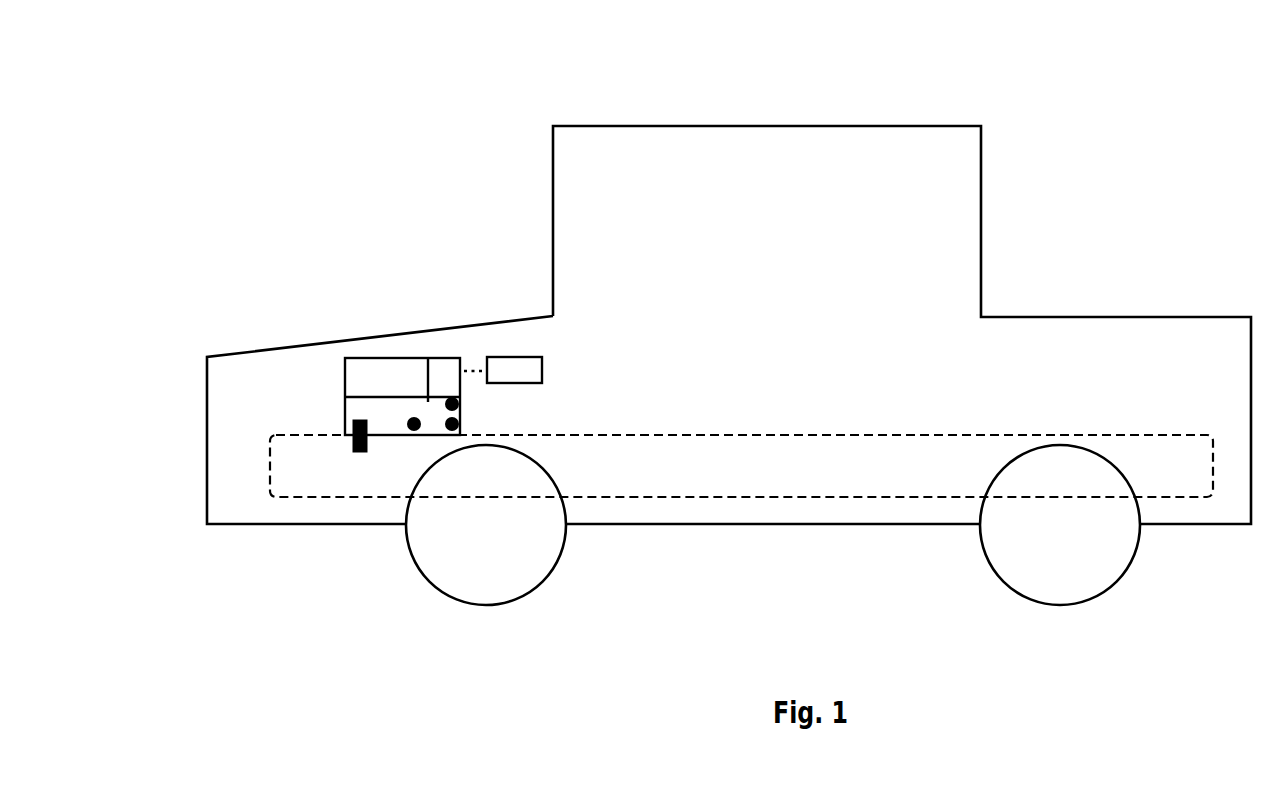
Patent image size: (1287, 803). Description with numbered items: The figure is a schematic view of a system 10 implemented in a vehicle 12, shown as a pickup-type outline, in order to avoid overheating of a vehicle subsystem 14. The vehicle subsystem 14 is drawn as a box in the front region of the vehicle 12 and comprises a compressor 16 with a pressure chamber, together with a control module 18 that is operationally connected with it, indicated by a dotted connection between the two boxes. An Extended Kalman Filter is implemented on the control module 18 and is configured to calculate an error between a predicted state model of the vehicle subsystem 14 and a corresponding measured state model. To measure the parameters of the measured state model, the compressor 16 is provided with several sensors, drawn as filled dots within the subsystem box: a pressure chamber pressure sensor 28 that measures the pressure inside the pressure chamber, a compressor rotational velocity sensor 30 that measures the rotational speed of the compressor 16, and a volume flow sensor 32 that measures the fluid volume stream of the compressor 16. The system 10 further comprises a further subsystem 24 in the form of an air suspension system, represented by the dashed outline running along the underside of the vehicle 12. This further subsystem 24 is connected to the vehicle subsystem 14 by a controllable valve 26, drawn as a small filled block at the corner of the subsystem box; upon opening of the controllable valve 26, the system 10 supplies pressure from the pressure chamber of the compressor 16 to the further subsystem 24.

The system 10 is at (311, 288).
The vehicle 12 is at (677, 171).
The vehicle subsystem 14 is at (385, 377).
The compressor 16 is at (428, 358).
The control module 18 is at (510, 365).
The further subsystem 24 is at (385, 493).
The controllable valve 26 is at (353, 421).
The pressure chamber pressure sensor 28 is at (451, 405).
The compressor rotational velocity sensor 30 is at (451, 425).
The volume flow sensor 32 is at (414, 425).